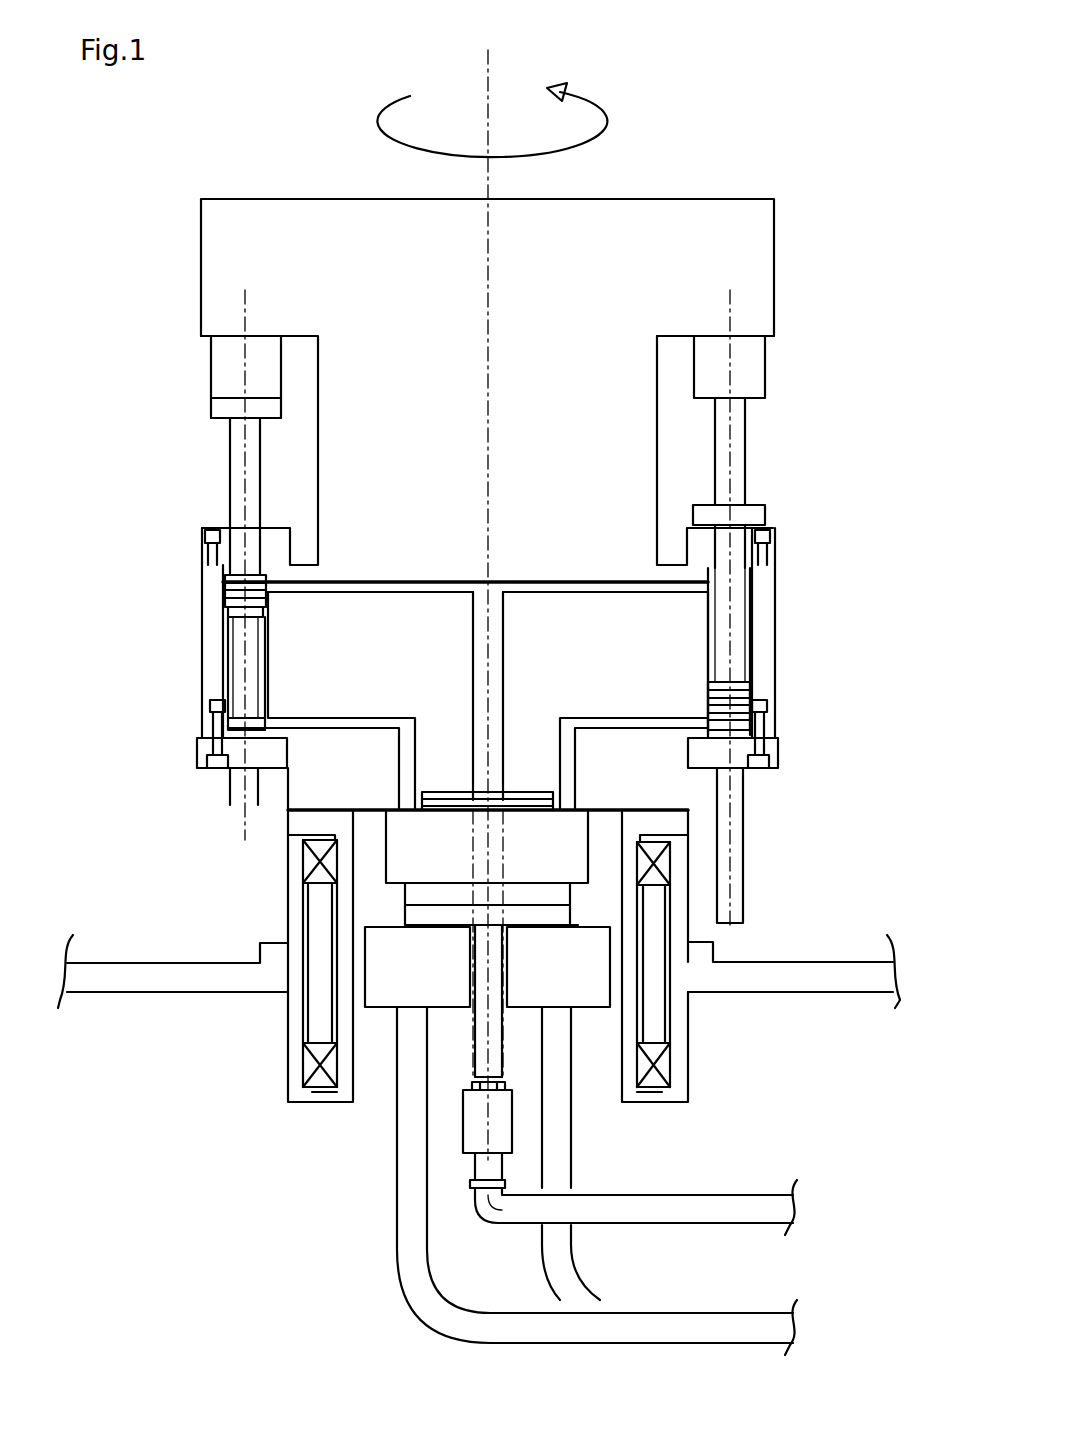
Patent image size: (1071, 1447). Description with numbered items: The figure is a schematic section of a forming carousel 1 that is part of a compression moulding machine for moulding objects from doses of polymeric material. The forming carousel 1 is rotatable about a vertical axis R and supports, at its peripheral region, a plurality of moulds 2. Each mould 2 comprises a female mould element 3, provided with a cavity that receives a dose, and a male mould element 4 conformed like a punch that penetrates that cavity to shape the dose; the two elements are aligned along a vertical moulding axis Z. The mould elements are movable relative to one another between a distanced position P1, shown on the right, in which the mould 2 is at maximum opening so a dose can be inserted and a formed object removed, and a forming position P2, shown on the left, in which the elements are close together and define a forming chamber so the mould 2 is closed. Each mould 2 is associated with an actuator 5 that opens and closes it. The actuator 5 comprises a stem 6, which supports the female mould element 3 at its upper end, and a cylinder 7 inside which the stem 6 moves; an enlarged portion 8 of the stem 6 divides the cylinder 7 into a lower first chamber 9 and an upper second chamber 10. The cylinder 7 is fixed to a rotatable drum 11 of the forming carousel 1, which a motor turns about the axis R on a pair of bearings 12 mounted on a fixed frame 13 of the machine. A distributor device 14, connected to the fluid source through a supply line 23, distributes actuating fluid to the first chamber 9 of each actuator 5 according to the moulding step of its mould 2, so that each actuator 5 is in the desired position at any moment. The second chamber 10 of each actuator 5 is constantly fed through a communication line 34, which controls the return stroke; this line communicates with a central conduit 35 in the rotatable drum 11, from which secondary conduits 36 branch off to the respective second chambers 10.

The forming carousel 1 is at (786, 111).
The mould 2 is at (498, 386).
The female mould element 3 is at (211, 418).
The male mould element 4 is at (222, 357).
The actuator 5 is at (195, 680).
The stem 6 is at (230, 645).
The cylinder 7 is at (752, 600).
The enlarged portion 8 is at (225, 608).
The first chamber 9 is at (228, 690).
The second chamber 10 is at (225, 587).
The rotatable drum 11 is at (667, 660).
The bearings 12 is at (305, 860).
The fixed frame 13 is at (857, 983).
The distributor device 14 is at (580, 875).
The supply line 23 is at (400, 1240).
The communication line 34 is at (638, 1218).
The central conduit 35 is at (470, 672).
The secondary conduits 36 is at (372, 582).
The axis R is at (488, 73).
The moulding axis Z is at (245, 486).
The distanced position P1 is at (797, 384).
The forming position P2 is at (151, 366).